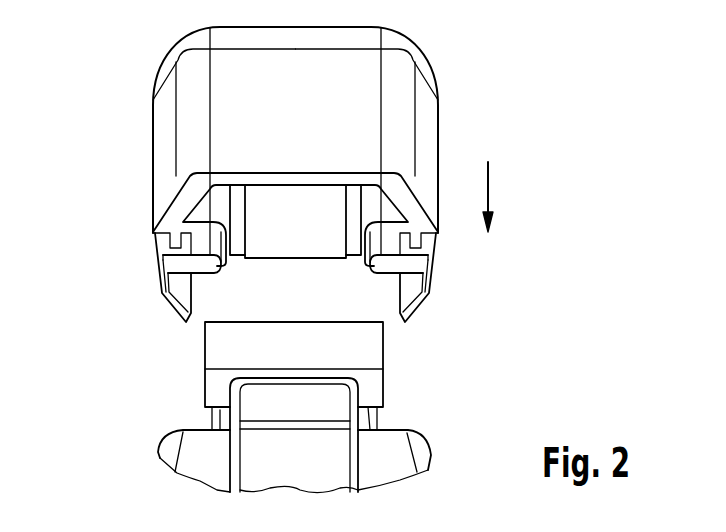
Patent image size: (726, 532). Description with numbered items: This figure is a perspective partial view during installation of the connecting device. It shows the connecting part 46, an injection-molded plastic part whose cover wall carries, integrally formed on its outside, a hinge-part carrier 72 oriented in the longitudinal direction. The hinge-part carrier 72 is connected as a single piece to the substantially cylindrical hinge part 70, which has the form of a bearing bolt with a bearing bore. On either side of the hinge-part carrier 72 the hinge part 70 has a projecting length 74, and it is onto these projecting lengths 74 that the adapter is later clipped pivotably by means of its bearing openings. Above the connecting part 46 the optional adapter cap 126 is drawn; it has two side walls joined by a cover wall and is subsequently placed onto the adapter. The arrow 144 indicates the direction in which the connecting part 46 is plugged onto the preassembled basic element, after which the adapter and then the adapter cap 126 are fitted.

The adapter cap 126 is at (239, 104).
The arrow 144 is at (489, 187).
The hinge part 70 is at (307, 348).
The projecting length 74 is at (215, 380).
The hinge-part carrier 72 is at (250, 462).
The connecting part 46 is at (447, 446).